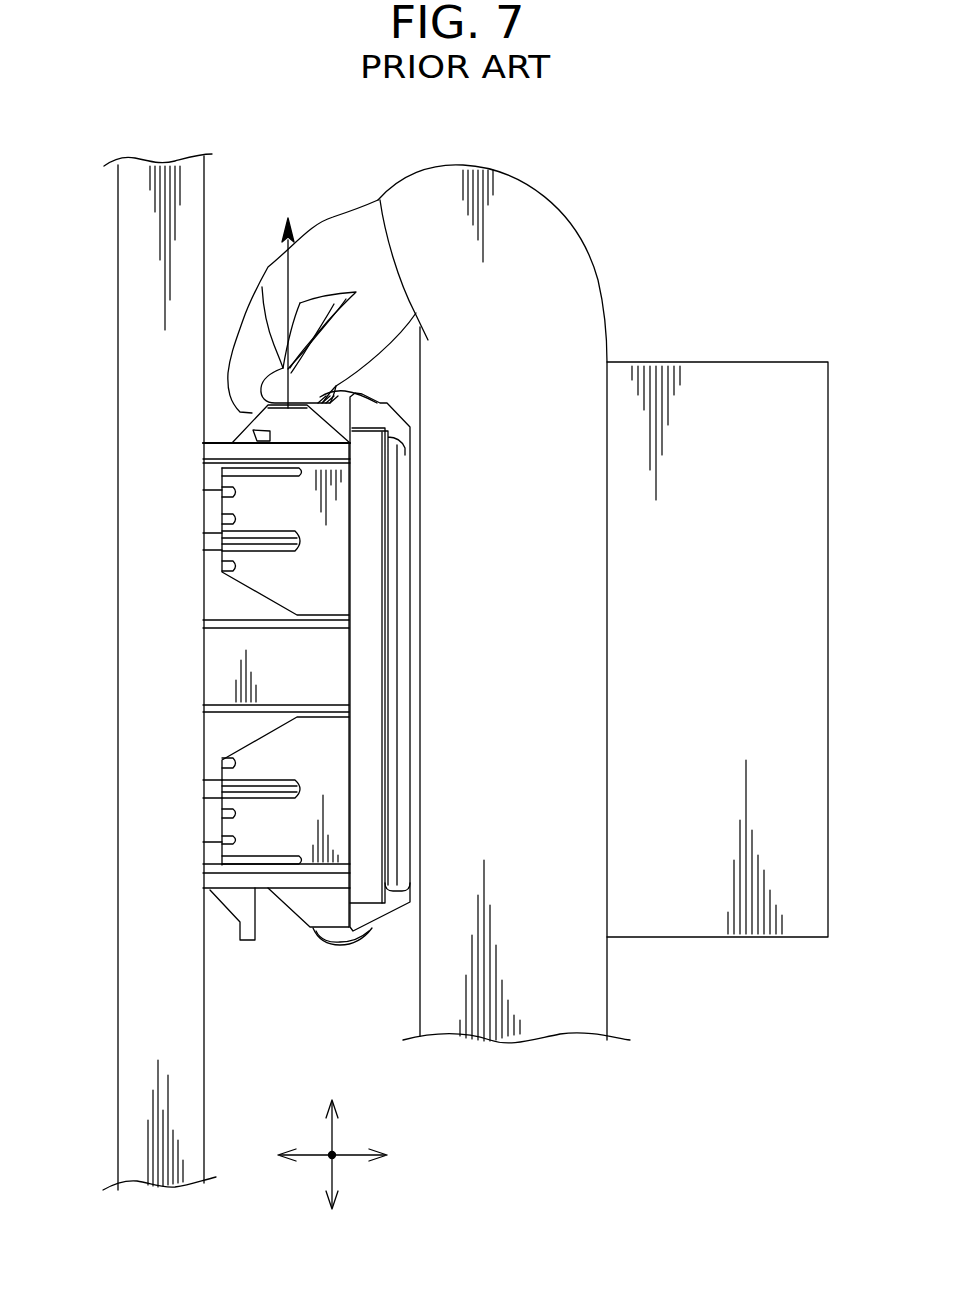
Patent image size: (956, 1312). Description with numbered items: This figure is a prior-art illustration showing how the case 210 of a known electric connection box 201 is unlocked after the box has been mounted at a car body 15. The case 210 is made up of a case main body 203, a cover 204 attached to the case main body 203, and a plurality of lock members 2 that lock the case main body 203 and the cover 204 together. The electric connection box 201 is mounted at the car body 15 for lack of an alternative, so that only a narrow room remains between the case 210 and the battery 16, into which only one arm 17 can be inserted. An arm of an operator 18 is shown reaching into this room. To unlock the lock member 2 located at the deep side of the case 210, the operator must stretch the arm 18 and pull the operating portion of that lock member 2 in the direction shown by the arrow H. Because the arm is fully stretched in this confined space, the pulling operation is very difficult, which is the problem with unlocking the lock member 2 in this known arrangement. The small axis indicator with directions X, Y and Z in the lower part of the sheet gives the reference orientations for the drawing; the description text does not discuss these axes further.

The lock member 2 is at (363, 388).
The car body 15 is at (140, 1093).
The battery 16 is at (748, 892).
The arm 17 is at (582, 983).
The arm of an operator 18 is at (265, 327).
The electric connection box 201 is at (328, 955).
The case main body 203 is at (245, 850).
The cover 204 is at (388, 882).
The case 210 is at (283, 914).
The arrow H is at (291, 273).
The X axis X is at (333, 1132).
The Y axis Y is at (318, 1157).
The Z axis Z is at (340, 1160).